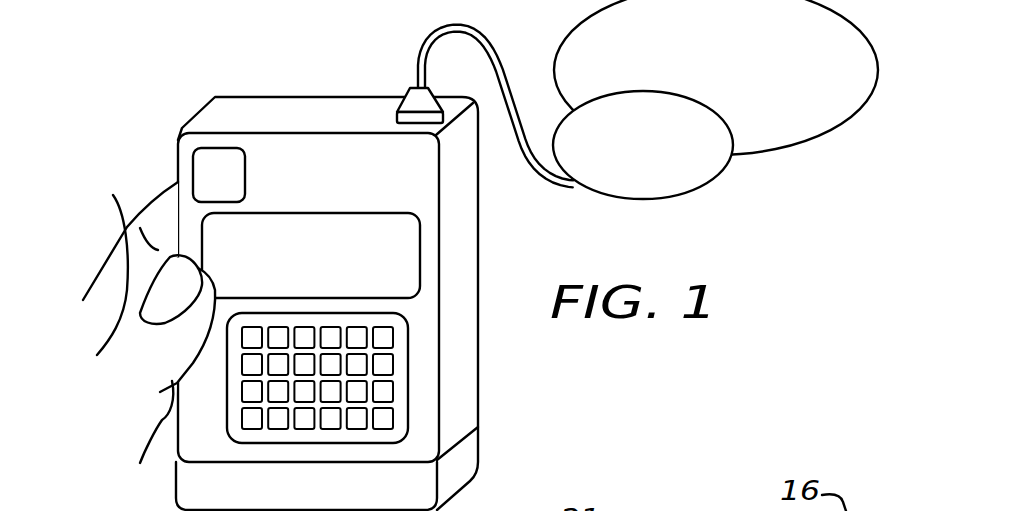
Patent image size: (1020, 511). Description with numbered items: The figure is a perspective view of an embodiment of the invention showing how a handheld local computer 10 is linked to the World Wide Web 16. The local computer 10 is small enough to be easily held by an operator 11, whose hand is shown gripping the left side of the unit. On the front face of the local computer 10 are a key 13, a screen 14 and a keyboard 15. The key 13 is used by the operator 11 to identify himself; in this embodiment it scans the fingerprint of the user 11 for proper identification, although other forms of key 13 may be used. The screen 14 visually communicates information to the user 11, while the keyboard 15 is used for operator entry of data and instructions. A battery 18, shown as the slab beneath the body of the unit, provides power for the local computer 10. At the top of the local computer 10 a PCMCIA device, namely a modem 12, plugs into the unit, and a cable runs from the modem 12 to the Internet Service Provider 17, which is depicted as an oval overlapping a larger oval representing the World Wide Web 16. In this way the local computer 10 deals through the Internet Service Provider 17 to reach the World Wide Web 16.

The local computer 10 is at (233, 100).
The operator 11 is at (118, 203).
The modem 12 is at (417, 100).
The key 13 is at (217, 163).
The screen 14 is at (330, 265).
The keyboard 15 is at (383, 395).
The World Wide Web 16 is at (787, 133).
The Internet Service Provider 17 is at (673, 180).
The battery 18 is at (450, 470).